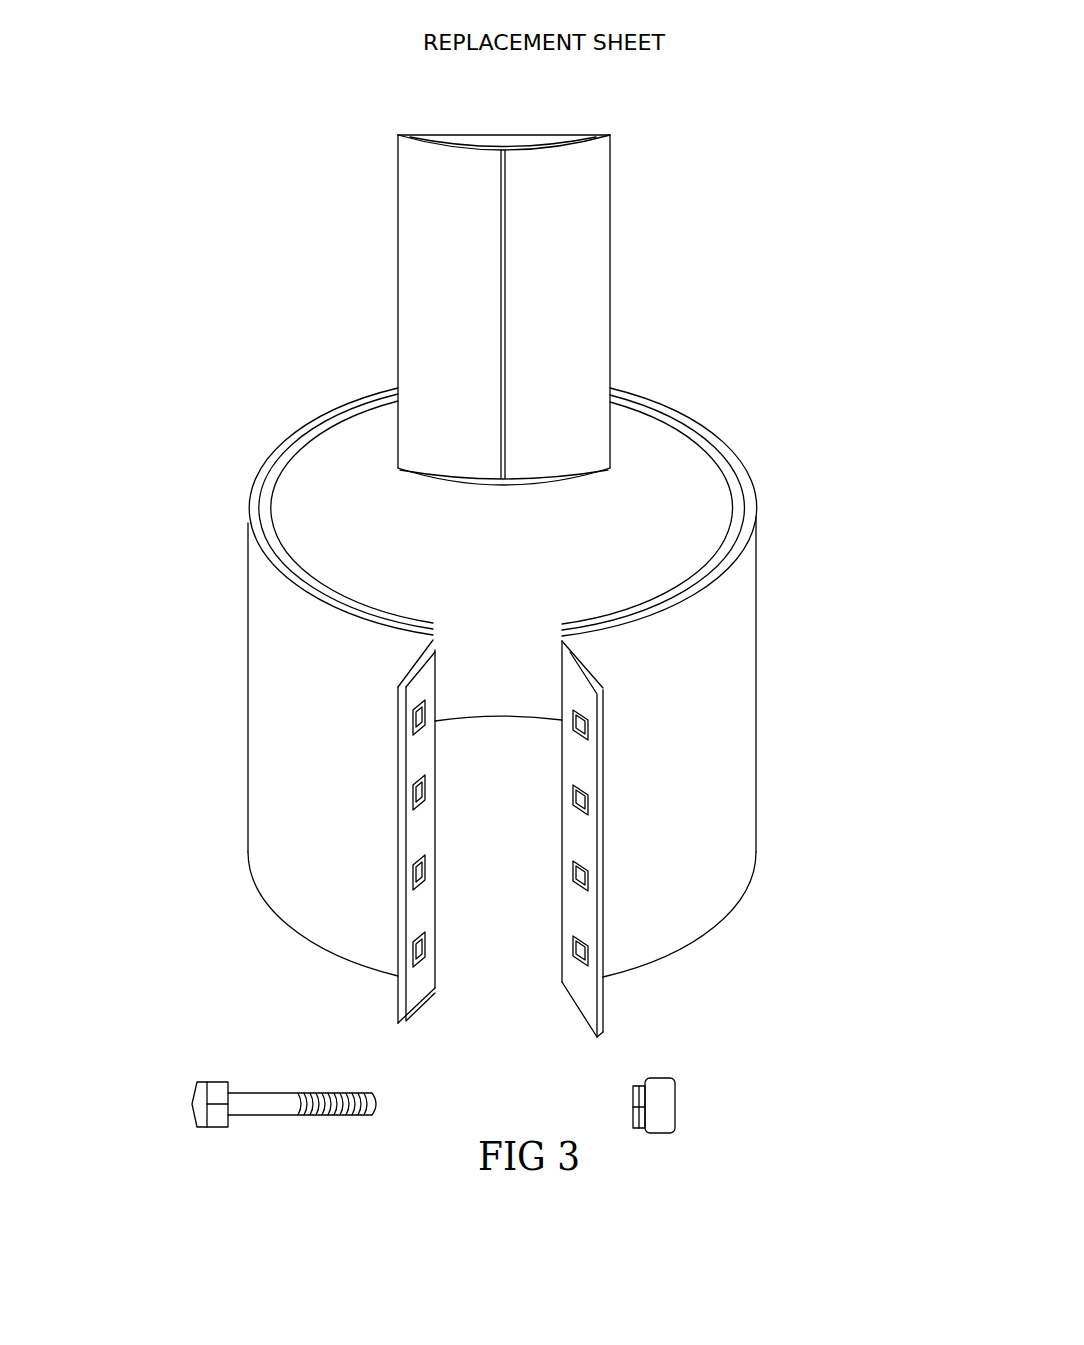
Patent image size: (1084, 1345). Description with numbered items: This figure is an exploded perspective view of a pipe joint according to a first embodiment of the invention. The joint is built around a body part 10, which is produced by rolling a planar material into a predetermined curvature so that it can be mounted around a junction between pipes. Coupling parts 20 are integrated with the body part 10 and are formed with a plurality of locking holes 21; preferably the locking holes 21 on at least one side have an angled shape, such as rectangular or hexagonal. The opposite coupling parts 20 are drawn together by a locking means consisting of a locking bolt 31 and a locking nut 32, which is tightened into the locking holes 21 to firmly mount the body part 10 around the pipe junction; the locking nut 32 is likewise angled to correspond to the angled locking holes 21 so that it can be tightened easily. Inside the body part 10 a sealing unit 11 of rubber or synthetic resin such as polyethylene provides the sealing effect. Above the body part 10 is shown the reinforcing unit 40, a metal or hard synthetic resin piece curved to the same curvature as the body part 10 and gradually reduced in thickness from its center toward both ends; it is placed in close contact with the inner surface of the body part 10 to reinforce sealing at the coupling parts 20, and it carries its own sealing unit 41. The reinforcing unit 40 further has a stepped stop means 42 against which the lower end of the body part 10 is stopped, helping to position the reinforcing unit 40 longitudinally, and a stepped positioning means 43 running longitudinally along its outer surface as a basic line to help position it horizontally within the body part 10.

The body part 10 is at (280, 672).
The sealing unit 11 is at (637, 617).
The coupling part 20 is at (583, 842).
The locking hole 21 is at (417, 872).
The locking bolt 31 is at (272, 1110).
The locking nut 32 is at (665, 1110).
The reinforcing unit 40 is at (473, 246).
The sealing unit 41 is at (497, 133).
The stop means 42 is at (442, 477).
The positioning means 43 is at (508, 326).